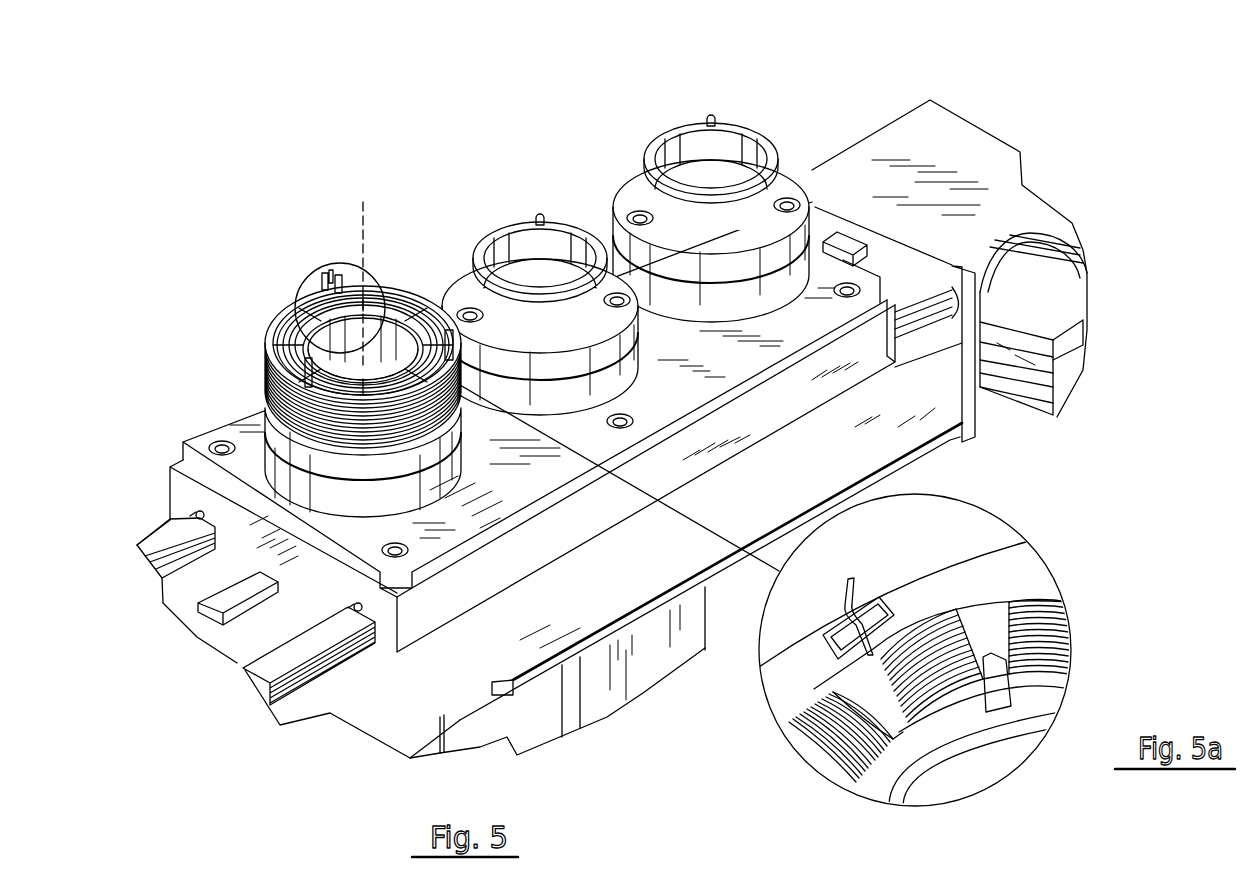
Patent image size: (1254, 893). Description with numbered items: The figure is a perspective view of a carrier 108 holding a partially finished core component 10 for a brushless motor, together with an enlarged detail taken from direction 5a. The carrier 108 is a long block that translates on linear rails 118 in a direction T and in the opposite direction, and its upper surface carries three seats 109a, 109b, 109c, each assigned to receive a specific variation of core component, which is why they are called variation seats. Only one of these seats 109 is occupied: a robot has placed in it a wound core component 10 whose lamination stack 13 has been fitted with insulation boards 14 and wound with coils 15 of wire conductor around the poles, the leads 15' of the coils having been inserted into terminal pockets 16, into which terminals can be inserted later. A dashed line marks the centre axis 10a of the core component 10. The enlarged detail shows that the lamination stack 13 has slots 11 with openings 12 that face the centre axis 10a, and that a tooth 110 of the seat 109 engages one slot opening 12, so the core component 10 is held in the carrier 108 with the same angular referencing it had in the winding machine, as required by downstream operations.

In FIG. 5, the core component 10 is at (212, 324).
In FIG. 5, the centre axis 10a is at (363, 240).
In FIG. 5A, the slot 11 is at (986, 625).
In FIG. 5A, the opening 12 is at (903, 725).
In FIG. 5, the lamination stack 13 is at (282, 362).
In FIG. 5A, the insulation board 14 is at (796, 659).
In FIG. 5A, the coil 15 is at (929, 676).
In FIG. 5A, the lead 15' is at (872, 584).
In FIG. 5A, the terminal pocket 16 is at (838, 657).
In FIG. 5, the carrier 108 is at (170, 497).
In FIG. 5, the seat 109 is at (343, 497).
In FIG. 5, the variation seat 109a is at (401, 198).
In FIG. 5, the variation seat 109b is at (555, 165).
In FIG. 5, the variation seat 109c is at (730, 35).
In FIG. 5A, the tooth 110 is at (991, 702).
In FIG. 5, the linear rail 118 is at (147, 550).
In FIG. 5, the direction 5a is at (307, 240).